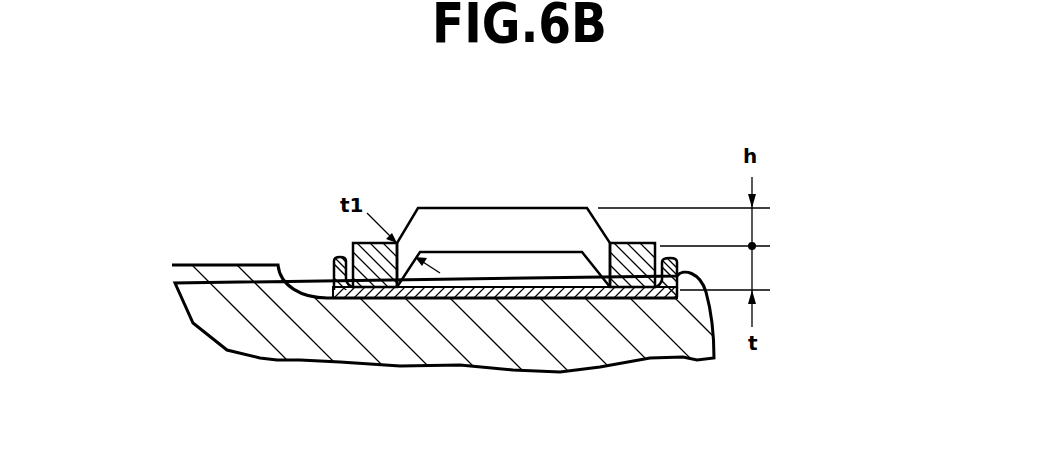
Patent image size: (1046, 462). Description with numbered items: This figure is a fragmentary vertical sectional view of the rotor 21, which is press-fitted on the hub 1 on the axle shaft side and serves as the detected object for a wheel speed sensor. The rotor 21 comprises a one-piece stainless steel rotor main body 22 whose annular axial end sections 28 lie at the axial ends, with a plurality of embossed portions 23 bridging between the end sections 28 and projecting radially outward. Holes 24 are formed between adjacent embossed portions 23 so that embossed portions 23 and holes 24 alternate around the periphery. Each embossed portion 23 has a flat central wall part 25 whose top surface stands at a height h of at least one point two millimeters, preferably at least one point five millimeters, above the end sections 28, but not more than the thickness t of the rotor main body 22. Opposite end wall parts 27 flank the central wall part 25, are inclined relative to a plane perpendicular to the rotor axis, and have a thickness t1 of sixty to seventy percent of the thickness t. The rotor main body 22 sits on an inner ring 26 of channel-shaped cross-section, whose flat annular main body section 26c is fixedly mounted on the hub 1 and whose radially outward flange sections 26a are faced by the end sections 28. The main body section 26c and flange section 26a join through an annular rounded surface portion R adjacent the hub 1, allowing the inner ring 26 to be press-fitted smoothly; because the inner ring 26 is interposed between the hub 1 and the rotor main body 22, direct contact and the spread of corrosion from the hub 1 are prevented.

The hub 1 is at (383, 340).
The rotor 21 is at (334, 241).
The rotor main body 22 is at (512, 200).
The embossed portion 23 is at (550, 207).
The hole 24 is at (587, 290).
The flat central wall part 25 is at (495, 232).
The inner ring 26 is at (500, 290).
The flange section 26a is at (333, 277).
The main body section 26c is at (437, 290).
The end wall part 27 is at (410, 218).
The annular axial end section 28 is at (650, 247).
The rounded surface portion R is at (327, 300).